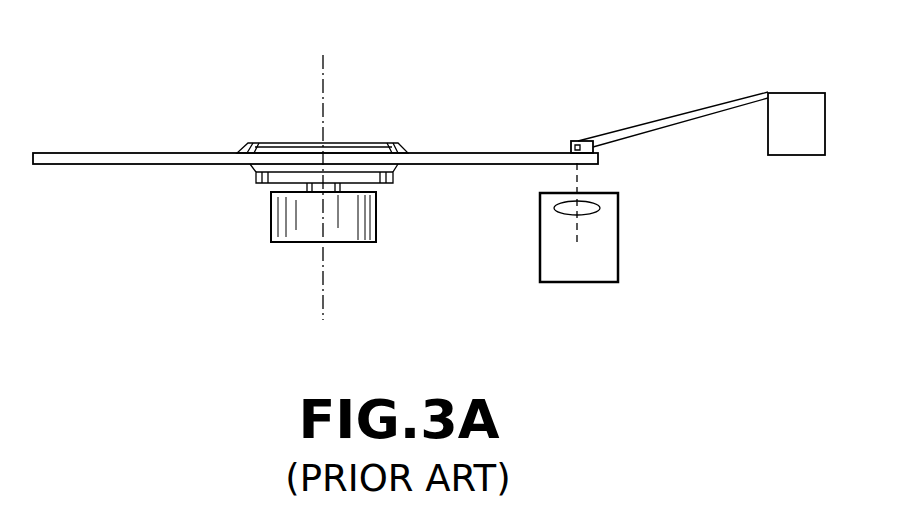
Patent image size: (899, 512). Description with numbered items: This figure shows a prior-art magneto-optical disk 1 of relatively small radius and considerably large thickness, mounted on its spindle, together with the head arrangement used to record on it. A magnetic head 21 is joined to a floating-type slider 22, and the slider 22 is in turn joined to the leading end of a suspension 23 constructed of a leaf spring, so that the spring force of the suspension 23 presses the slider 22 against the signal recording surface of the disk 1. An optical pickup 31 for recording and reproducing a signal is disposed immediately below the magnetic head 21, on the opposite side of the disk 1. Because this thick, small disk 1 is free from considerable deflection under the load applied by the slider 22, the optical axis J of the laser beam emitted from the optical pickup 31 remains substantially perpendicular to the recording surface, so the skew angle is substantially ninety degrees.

The magneto-optical disk 1 is at (156, 144).
The magnetic head 21 is at (570, 148).
The floating-type slider 22 is at (608, 145).
The suspension 23 is at (697, 108).
The optical pickup 31 is at (607, 232).
The optical axis J is at (578, 172).